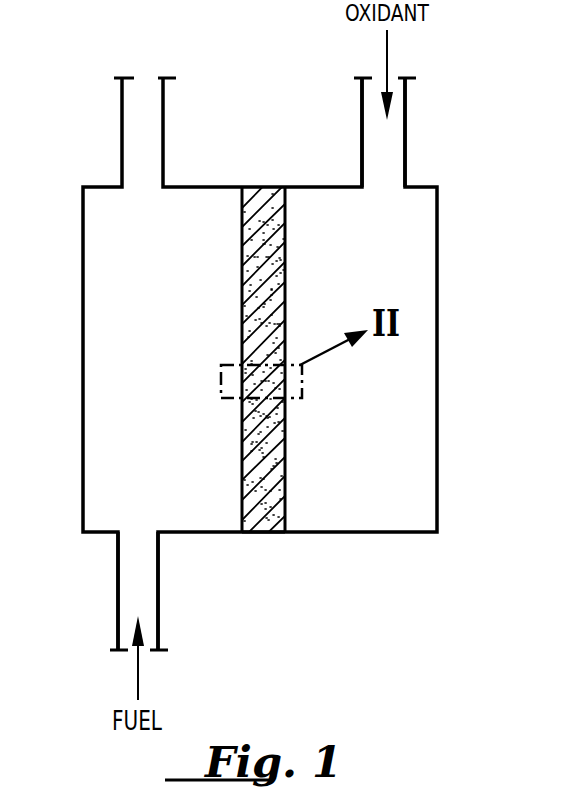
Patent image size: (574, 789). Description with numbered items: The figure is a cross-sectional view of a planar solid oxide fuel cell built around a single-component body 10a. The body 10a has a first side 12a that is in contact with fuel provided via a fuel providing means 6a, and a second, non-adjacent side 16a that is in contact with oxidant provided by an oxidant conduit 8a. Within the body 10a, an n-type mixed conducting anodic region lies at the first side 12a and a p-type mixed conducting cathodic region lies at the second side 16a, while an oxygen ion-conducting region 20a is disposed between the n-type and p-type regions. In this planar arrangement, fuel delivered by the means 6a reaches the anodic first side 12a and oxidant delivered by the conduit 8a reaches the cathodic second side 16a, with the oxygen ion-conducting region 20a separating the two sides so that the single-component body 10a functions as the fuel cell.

The fuel providing means 6a is at (140, 575).
The oxidant conduit 8a is at (385, 145).
The single-component body 10a is at (289, 272).
The first side 12a is at (242, 265).
The second side 16a is at (285, 430).
The oxygen ion-conducting region 20a is at (265, 532).